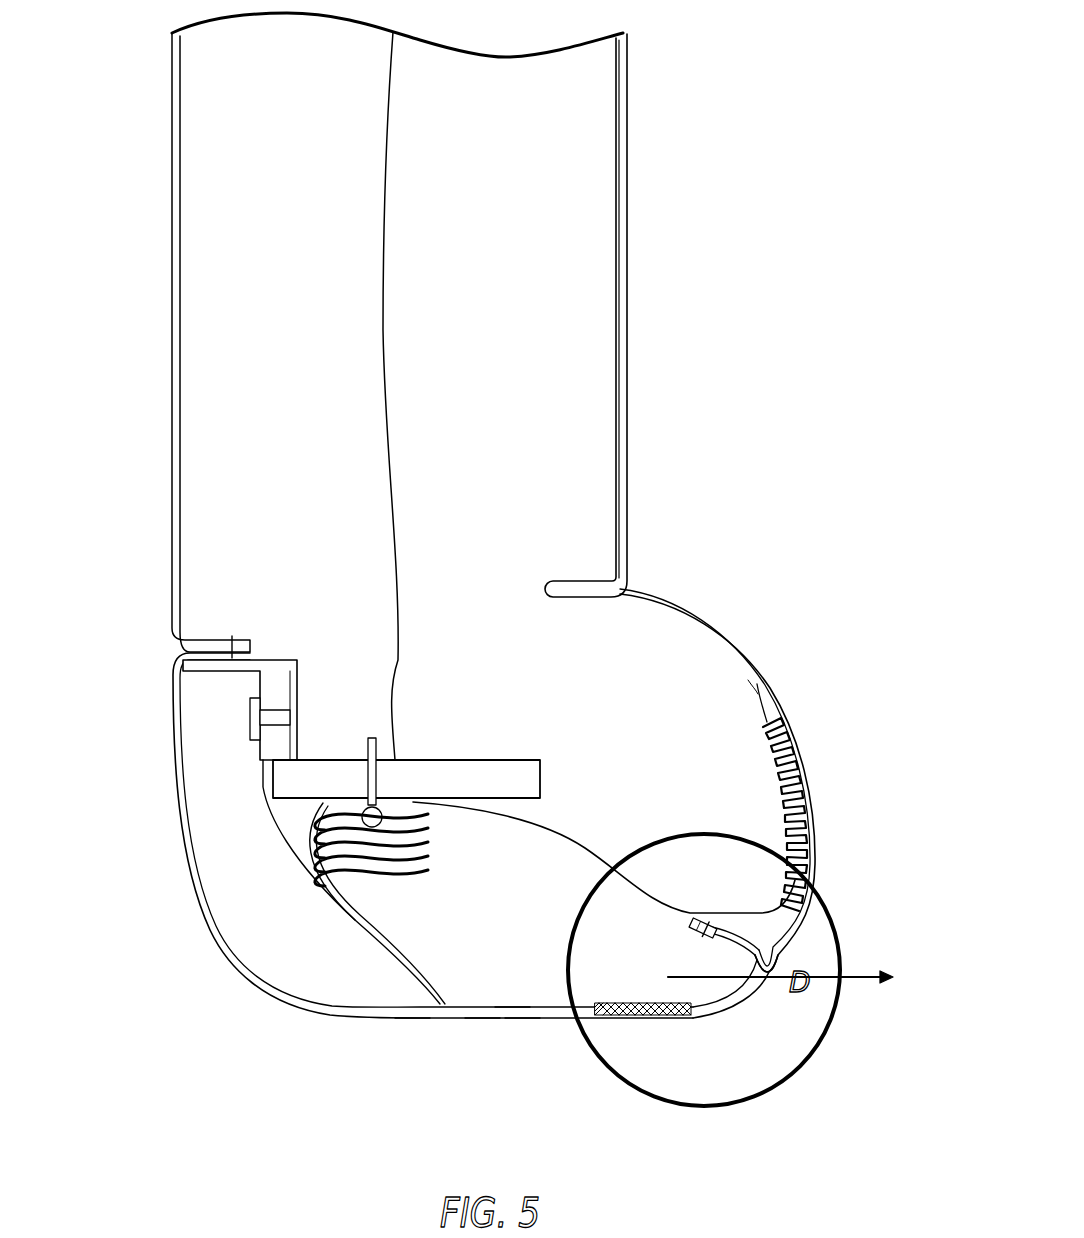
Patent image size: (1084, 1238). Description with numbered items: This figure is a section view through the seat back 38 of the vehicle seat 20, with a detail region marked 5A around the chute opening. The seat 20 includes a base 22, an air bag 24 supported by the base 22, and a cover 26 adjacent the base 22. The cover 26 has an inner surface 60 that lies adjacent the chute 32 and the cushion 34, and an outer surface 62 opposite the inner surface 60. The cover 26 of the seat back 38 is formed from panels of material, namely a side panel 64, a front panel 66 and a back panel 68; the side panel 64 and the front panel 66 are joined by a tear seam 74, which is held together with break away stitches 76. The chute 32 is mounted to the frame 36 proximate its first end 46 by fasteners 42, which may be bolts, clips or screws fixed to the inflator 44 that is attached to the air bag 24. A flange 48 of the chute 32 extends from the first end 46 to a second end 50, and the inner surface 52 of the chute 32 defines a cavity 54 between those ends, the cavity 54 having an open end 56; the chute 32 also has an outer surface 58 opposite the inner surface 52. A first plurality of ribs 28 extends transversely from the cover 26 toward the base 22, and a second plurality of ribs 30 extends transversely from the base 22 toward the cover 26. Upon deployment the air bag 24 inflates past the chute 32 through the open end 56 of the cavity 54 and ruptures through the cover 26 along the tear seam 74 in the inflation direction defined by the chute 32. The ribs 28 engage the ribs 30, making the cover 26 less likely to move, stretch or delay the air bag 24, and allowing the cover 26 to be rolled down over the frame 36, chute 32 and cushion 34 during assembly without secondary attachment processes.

The seat 20 is at (494, 576).
The base 22 is at (665, 625).
The air bag 24 is at (270, 990).
The cover 26 is at (172, 415).
The plurality of ribs 28 is at (810, 856).
The plurality of ribs 30 is at (785, 760).
The chute 32 is at (510, 1006).
The cushion 34 is at (565, 310).
The frame 36 is at (258, 790).
The seat back 38 is at (720, 325).
The fasteners 42 is at (368, 750).
The inflator 44 is at (410, 870).
The first end 46 is at (385, 815).
The flange 48 is at (410, 1014).
The second end 50 is at (700, 990).
The inner surface 52 is at (405, 985).
The cavity 54 is at (534, 927).
The open end 56 is at (730, 1000).
The outer surface 58 is at (480, 1020).
The inner surface 60 is at (755, 685).
The outer surface 62 is at (760, 660).
The side panel 64 is at (520, 1020).
The front panel 66 is at (700, 615).
The back panel 68 is at (172, 495).
The tear seam 74 is at (778, 955).
The break away stitches 76 is at (700, 930).
The detail view 5A is at (721, 1105).